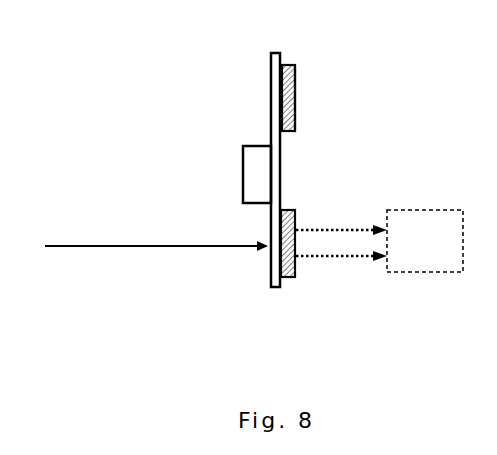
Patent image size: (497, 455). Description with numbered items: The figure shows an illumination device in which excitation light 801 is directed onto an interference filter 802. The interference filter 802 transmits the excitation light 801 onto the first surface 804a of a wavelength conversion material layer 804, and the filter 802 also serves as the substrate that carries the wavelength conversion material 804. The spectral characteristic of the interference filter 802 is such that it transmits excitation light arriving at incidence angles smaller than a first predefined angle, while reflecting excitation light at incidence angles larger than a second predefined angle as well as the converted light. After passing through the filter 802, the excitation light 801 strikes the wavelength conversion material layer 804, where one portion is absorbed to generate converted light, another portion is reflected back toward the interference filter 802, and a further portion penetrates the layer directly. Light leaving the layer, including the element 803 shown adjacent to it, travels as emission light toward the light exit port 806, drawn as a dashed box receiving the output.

The excitation light 801 is at (142, 245).
The interference filter 802 is at (272, 68).
The lower hatched element (diffraction/output element) 803 is at (337, 254).
The wavelength conversion material layer 804 is at (295, 83).
The first surface of the wavelength conversion material layer 804a is at (295, 72).
The light exit port 806 is at (410, 263).